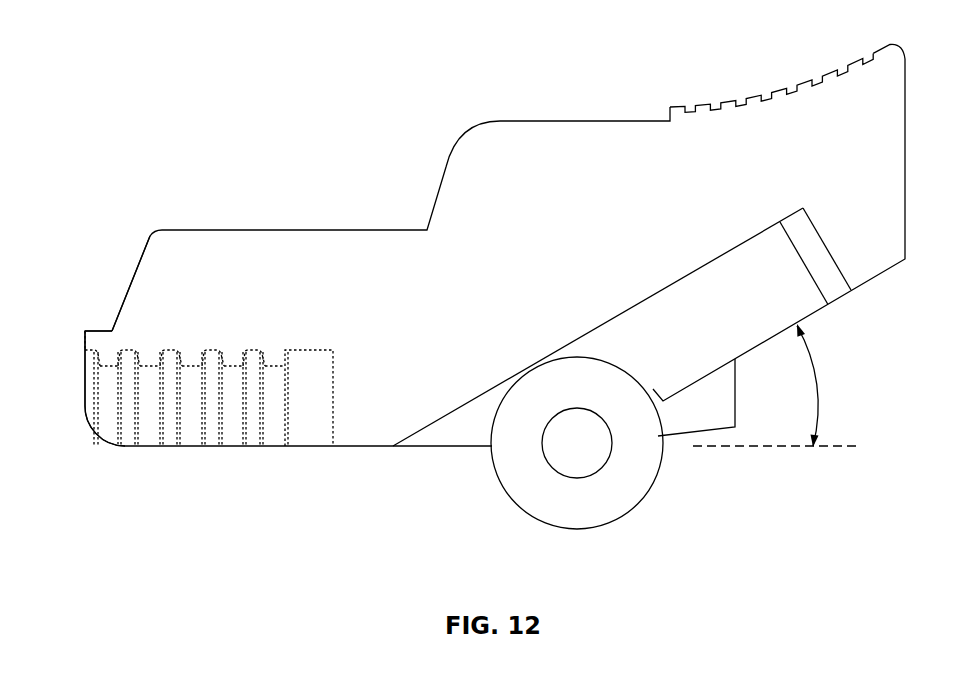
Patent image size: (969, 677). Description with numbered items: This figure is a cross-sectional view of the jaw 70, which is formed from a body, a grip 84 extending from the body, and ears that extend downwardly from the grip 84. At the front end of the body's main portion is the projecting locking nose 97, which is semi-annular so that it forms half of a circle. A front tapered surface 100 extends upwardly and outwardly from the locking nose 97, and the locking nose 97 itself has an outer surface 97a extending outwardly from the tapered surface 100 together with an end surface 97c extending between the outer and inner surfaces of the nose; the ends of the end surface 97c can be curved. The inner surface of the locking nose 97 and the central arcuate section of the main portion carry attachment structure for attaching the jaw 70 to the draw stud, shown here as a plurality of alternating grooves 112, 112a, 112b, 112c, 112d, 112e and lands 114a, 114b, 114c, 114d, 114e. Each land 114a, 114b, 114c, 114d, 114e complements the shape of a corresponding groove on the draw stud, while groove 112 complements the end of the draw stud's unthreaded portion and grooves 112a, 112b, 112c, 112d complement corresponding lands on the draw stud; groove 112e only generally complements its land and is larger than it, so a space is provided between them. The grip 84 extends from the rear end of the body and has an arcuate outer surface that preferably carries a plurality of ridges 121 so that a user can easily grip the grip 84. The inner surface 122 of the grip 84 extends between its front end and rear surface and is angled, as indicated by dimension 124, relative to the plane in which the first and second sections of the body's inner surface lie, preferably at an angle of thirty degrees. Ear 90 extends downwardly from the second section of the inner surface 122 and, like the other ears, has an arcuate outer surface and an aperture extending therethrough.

The jaw 70 is at (579, 56).
The grip 84 is at (767, 102).
The ear 90 is at (578, 510).
The locking nose 97 is at (95, 330).
The outer surface of locking nose 97a is at (108, 330).
The end surface of locking nose 97c is at (85, 342).
The front tapered surface 100 is at (135, 275).
The groove 112 is at (88, 362).
The groove 112a is at (130, 430).
The groove 112b is at (172, 430).
The groove 112c is at (212, 433).
The groove 112d is at (252, 433).
The groove 112e is at (307, 430).
The land 114a is at (110, 355).
The land 114b is at (152, 355).
The land 114c is at (192, 355).
The land 114d is at (232, 355).
The land 114e is at (272, 355).
The ridges 121 is at (833, 70).
The inner surface of grip 122 is at (872, 280).
The angle dimension 124 is at (817, 383).